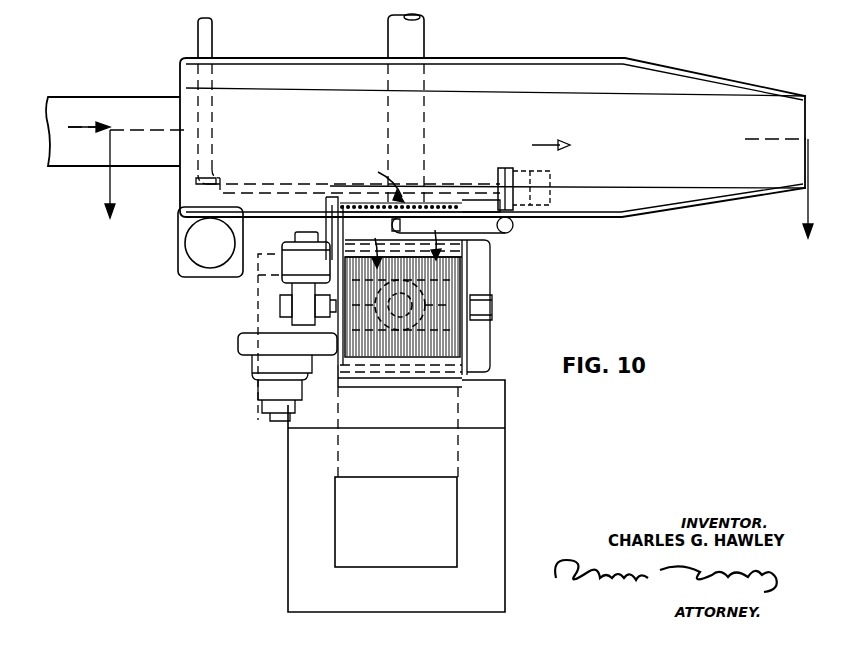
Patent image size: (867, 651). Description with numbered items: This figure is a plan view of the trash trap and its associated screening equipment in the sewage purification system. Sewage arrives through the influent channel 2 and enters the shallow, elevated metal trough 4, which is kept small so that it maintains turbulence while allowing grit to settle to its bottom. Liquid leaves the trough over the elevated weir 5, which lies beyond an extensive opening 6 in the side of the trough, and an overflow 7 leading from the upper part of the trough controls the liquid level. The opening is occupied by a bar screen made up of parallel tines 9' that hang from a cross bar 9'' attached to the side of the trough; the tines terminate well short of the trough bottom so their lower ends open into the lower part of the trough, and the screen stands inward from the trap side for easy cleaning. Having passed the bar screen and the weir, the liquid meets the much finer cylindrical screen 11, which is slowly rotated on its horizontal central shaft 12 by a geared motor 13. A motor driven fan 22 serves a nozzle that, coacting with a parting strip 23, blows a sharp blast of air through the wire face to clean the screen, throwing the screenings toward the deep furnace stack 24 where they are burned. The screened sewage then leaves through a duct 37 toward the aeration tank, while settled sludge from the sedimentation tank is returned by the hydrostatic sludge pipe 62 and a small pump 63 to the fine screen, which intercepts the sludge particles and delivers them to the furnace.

The influent channel 2 is at (103, 104).
The trough 4 is at (546, 62).
The weir 5 is at (370, 217).
The opening 6 is at (350, 217).
The overflow 7 is at (197, 252).
The tines 9' is at (464, 178).
The cross bar 9'' is at (469, 174).
The fine screen 11 is at (450, 287).
The central shaft 12 is at (459, 189).
The motor 13 is at (287, 306).
The fan 22 is at (245, 347).
The parting strip 23 is at (438, 362).
The furnace stack 24 is at (450, 518).
The duct 37 is at (424, 44).
The sludge pipe 62 is at (211, 34).
The pump 63 is at (523, 196).